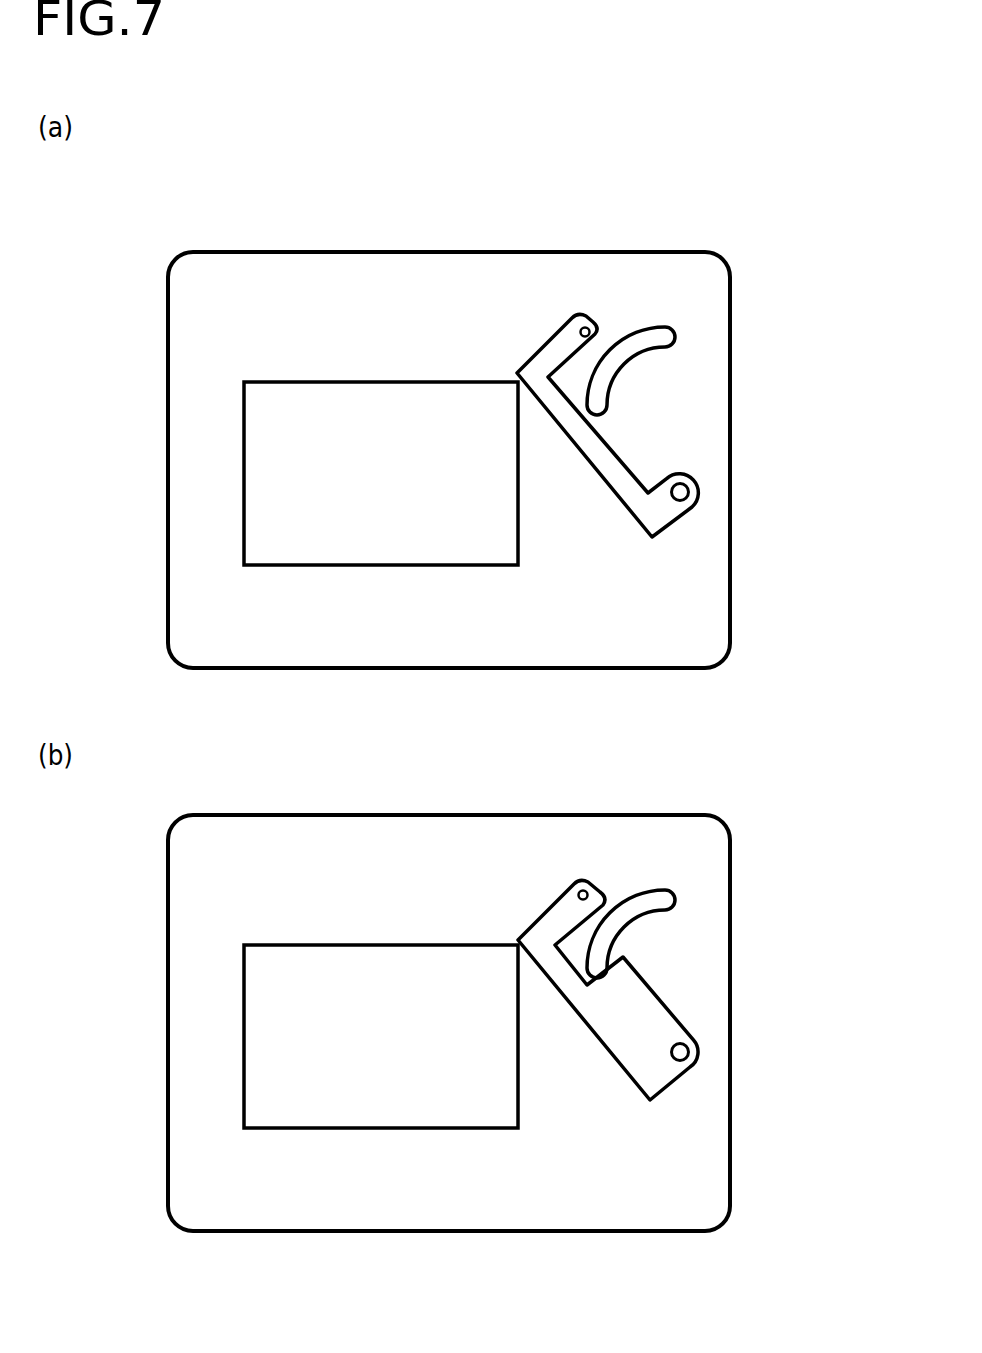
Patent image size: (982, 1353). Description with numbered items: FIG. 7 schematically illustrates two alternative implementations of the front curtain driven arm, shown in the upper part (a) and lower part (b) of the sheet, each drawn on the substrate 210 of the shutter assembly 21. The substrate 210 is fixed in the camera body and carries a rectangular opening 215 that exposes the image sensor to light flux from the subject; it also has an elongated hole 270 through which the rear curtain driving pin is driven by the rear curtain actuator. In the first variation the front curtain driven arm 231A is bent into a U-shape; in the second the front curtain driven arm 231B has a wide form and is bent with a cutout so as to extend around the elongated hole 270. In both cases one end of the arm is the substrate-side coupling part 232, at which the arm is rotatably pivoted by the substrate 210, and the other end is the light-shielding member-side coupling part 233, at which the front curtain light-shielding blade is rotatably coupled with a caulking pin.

The fixing unit 21 is at (419, 230).
The substrate 210 is at (428, 655).
The opening 215 is at (270, 485).
The front curtain driven arm 231A is at (565, 433).
The front curtain driven arm 231B is at (565, 995).
The substrate-side coupling part 232 is at (700, 492).
The light-shielding member-side coupling part 233 is at (583, 328).
The elongated hole 270 is at (673, 328).